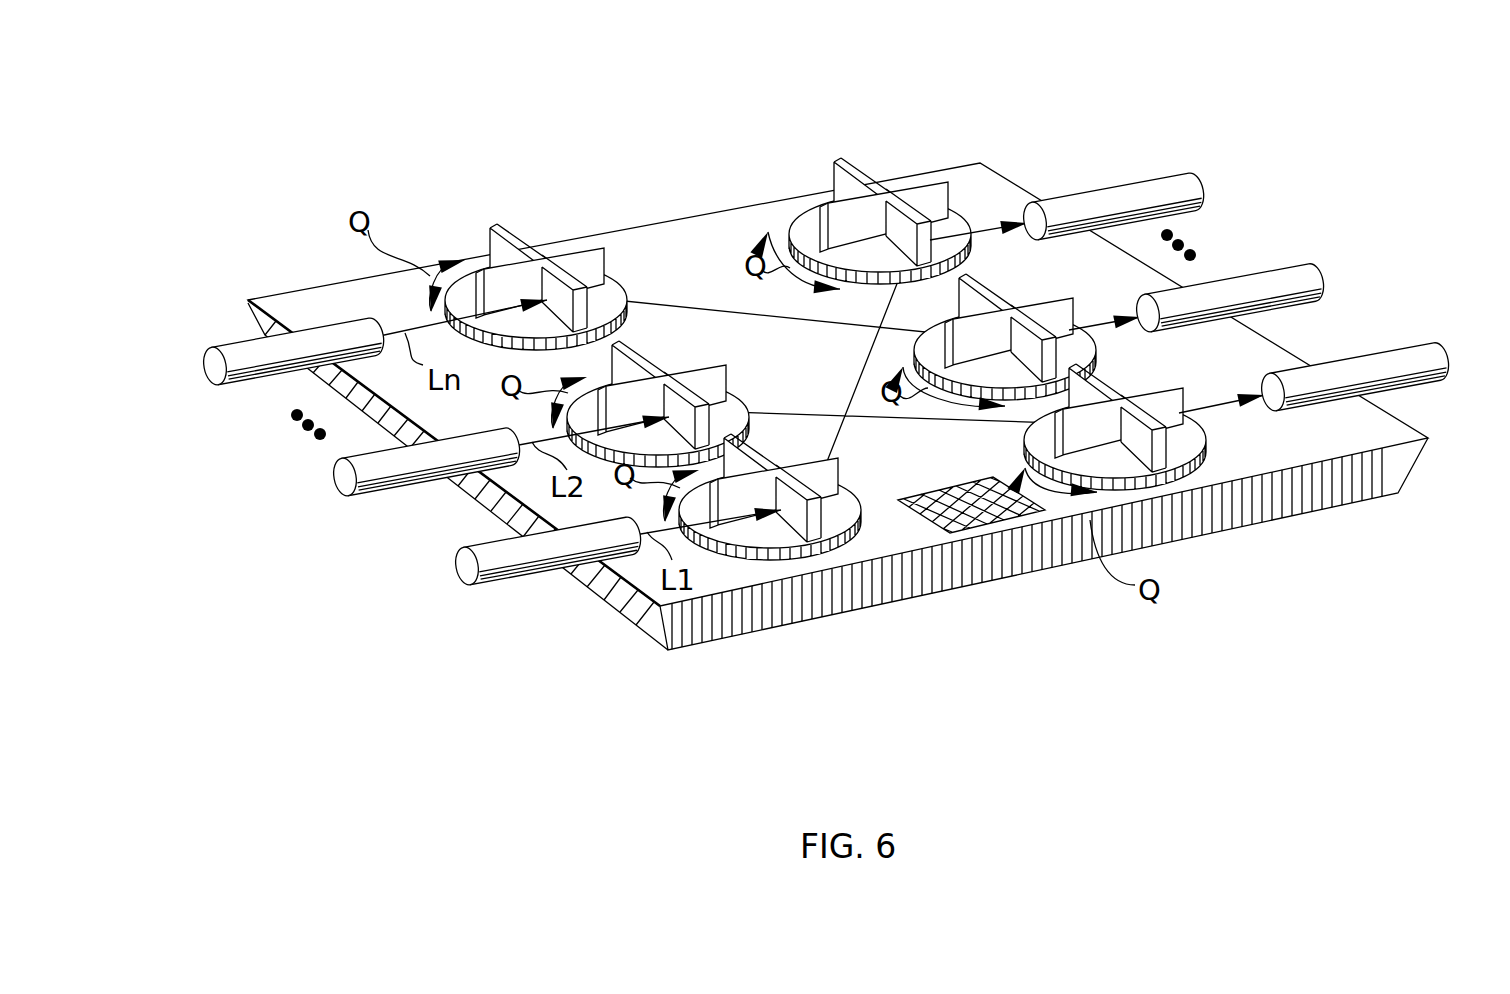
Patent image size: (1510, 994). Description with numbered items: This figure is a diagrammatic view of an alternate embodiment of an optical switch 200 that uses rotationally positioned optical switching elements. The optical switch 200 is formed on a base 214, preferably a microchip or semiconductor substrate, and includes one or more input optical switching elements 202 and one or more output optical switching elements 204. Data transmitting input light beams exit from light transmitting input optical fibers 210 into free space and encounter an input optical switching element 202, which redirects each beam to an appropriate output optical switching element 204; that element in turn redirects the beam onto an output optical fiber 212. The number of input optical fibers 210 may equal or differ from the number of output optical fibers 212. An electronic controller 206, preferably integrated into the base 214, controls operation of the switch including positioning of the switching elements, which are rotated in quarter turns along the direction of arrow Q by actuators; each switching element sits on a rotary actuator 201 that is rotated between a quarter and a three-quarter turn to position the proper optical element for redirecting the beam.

The optical switch 200 is at (745, 179).
The rotary actuator 201 is at (1210, 440).
The input optical switching element 202 is at (604, 253).
The output optical switching element 204 is at (1031, 298).
The electronic controller 206 is at (1000, 515).
The input optical fiber 210 is at (213, 346).
The output optical fiber 212 is at (1137, 170).
The base 214 is at (880, 548).